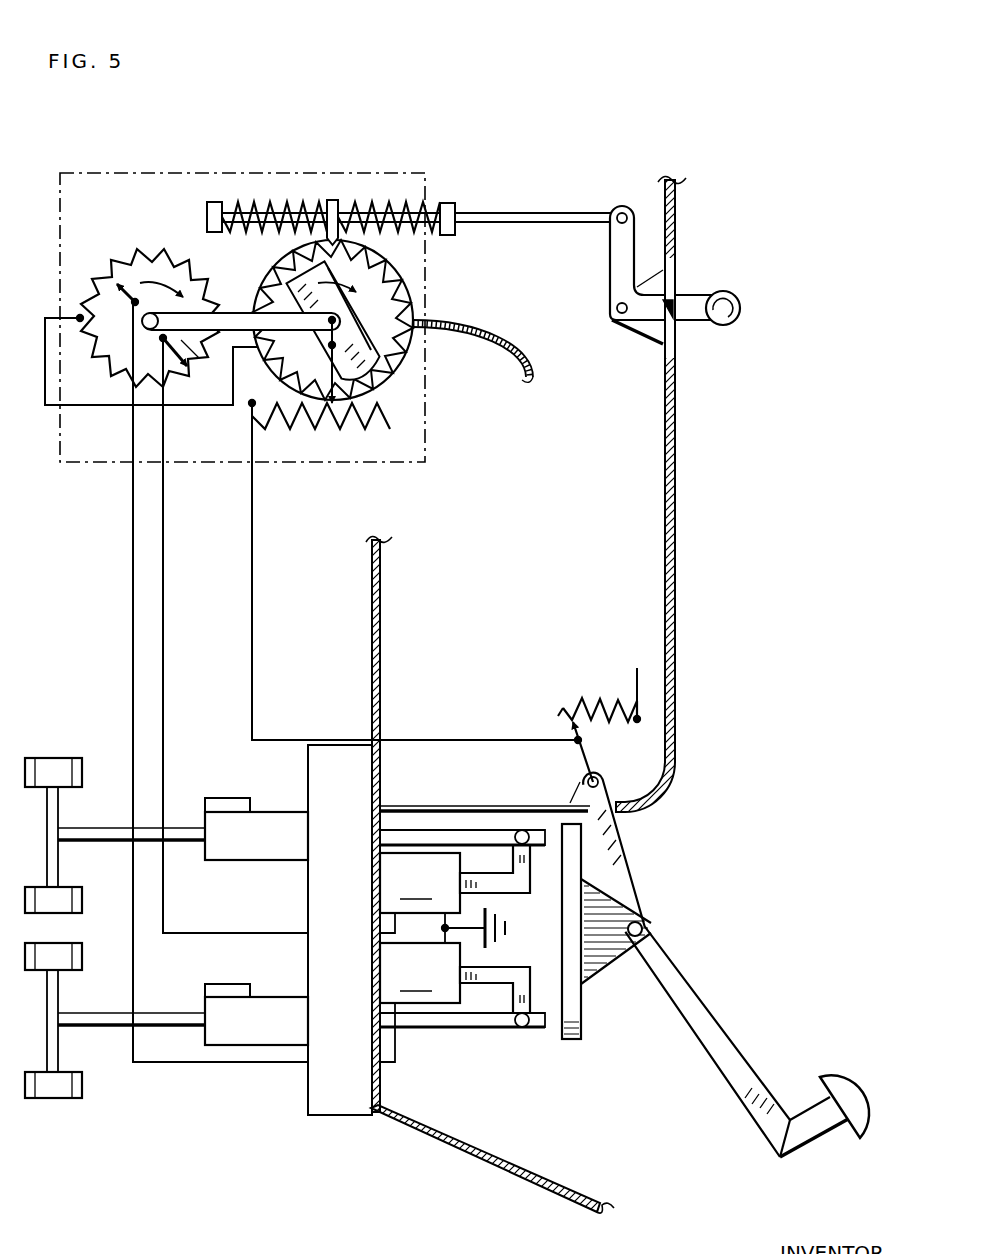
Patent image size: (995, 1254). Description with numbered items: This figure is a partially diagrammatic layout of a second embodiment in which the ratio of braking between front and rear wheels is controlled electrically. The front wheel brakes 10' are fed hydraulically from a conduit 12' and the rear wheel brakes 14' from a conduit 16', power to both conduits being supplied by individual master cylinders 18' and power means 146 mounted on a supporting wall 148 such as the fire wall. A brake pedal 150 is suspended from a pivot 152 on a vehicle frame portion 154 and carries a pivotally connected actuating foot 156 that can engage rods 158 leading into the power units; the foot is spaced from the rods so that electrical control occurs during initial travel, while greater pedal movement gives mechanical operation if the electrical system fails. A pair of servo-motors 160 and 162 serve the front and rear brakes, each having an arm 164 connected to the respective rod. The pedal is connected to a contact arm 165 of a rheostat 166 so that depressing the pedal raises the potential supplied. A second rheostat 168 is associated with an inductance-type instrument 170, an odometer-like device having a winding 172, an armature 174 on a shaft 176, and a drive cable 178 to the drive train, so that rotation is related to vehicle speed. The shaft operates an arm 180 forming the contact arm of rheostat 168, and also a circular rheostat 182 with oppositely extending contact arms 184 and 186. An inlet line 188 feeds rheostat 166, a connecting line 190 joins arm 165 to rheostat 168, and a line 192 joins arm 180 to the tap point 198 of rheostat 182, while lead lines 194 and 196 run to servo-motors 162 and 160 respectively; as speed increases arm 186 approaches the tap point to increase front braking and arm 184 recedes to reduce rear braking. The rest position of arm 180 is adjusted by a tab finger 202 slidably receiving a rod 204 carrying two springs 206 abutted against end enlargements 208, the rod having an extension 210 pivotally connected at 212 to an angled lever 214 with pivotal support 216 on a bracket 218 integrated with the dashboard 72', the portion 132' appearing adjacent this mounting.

The front wheel brakes 10' is at (49, 835).
The conduit 12' is at (131, 820).
The rear wheel brakes 14' is at (49, 1020).
The conduit 16' is at (131, 1005).
The master cylinders 18' is at (256, 921).
The dashboard 72' is at (668, 494).
The housing wall portion 132' is at (702, 348).
The power means 146 is at (320, 960).
The supporting wall 148 is at (380, 675).
The brake pedal 150 is at (846, 1095).
The pivot 152 is at (586, 781).
The vehicle frame portion 154 is at (505, 808).
The actuating foot 156 is at (601, 948).
The rods 158 is at (440, 830).
The servo-motor 160 is at (420, 893).
The servo-motor 162 is at (420, 1002).
The arm 164 is at (508, 975).
The contact arm 165 is at (580, 741).
The rheostat 166 is at (603, 705).
The second rheostat 168 is at (305, 432).
The inductance-type instrument 170 is at (273, 270).
The winding 172 is at (397, 277).
The armature 174 is at (355, 333).
The shaft 176 is at (238, 298).
The drive cable 178 is at (502, 343).
The arm 180 is at (338, 377).
The rheostat 182 is at (168, 257).
The contact arm 184 is at (135, 300).
The contact arm 186 is at (189, 362).
The inlet line 188 is at (637, 668).
The connecting line 190 is at (252, 590).
The line 192 is at (208, 405).
The lead line 194 is at (133, 592).
The lead line 196 is at (163, 675).
The tap point 198 is at (80, 318).
The tab finger 202 is at (330, 215).
The rod 204 is at (283, 213).
The springs 206 is at (267, 212).
The end enlargements 208 is at (210, 215).
The extension 210 is at (535, 215).
The pivotal connection 212 is at (622, 213).
The angled lever 214 is at (690, 308).
The pivotal support 216 is at (616, 316).
The bracket 218 is at (652, 333).